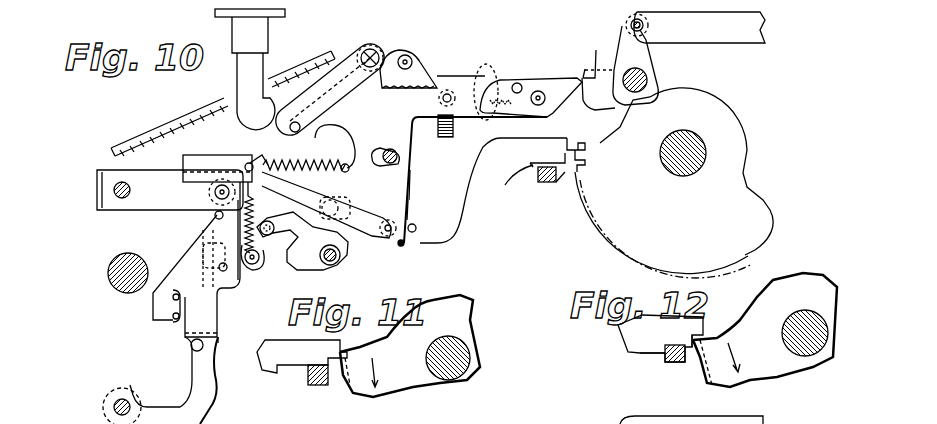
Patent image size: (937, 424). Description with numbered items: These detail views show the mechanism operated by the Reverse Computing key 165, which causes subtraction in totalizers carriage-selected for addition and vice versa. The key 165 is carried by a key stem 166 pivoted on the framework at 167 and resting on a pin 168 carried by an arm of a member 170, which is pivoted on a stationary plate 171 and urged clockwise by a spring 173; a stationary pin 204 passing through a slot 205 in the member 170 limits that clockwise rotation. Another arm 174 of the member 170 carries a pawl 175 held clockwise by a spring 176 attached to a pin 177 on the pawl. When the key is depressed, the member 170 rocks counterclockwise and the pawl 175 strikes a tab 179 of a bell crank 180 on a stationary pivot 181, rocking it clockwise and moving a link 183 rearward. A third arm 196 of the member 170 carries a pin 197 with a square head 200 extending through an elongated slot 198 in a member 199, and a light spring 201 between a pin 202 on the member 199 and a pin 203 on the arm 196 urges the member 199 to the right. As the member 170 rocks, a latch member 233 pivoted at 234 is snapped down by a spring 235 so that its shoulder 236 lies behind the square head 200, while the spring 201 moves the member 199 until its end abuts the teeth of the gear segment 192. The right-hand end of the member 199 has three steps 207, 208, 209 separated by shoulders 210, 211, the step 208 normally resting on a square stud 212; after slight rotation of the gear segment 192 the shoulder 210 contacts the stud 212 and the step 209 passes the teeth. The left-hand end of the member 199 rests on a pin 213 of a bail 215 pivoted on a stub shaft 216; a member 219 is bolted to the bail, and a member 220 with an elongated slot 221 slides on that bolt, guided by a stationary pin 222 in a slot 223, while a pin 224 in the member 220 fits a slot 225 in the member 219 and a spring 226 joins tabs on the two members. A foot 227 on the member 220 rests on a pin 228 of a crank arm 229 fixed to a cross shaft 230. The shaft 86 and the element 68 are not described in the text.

In FIG. 10, the Reverse Computing key 165 is at (285, 13).
In FIG. 10, the key stem 166 is at (238, 72).
In FIG. 10, the pivot 167 is at (375, 50).
In FIG. 10, the pin 168 is at (320, 119).
In FIG. 10, the member 170 is at (418, 121).
In FIG. 10, the stationary plate 171 is at (417, 57).
In FIG. 10, the spring 173 is at (454, 130).
In FIG. 10, the arm 174 is at (460, 78).
In FIG. 10, the pawl 175 is at (567, 72).
In FIG. 10, the spring 176 is at (498, 79).
In FIG. 10, the pin 177 is at (500, 123).
In FIG. 10, the tab 179 is at (596, 50).
In FIG. 10, the bell crank 180 is at (657, 68).
In FIG. 10, the stationary pivot 181 is at (647, 82).
In FIG. 10, the link 183 is at (732, 48).
In FIG. 10, the gear segment 192 is at (748, 150).
In FIG. 11, the gear segment 192 is at (470, 305).
In FIG. 12, the gear segment 192 is at (757, 297).
In FIG. 10, the shaft 86 is at (690, 178).
In FIG. 11, the shaft 86 is at (427, 347).
In FIG. 12, the shaft 86 is at (813, 298).
In FIG. 10, the third arm 196 is at (410, 185).
In FIG. 10, the pin 197 is at (390, 236).
In FIG. 10, the elongated slot 198 is at (416, 228).
In FIG. 10, the member 199 is at (183, 156).
In FIG. 11, the member 199 is at (283, 370).
In FIG. 12, the member 199 is at (620, 337).
In FIG. 10, the square head 200 is at (404, 246).
In FIG. 10, the spring 201 is at (285, 160).
In FIG. 10, the pin 202 is at (246, 163).
In FIG. 10, the pin 203 is at (347, 164).
In FIG. 10, the stationary pin 204 is at (393, 157).
In FIG. 10, the slot 205 is at (378, 156).
In FIG. 10, the step 207 is at (533, 166).
In FIG. 10, the step 208 is at (540, 182).
In FIG. 10, the step 209 is at (582, 167).
In FIG. 11, the step 209 is at (328, 385).
In FIG. 12, the step 209 is at (683, 360).
In FIG. 10, the shoulder 210 is at (530, 163).
In FIG. 12, the shoulder 210 is at (673, 343).
In FIG. 10, the shoulder 211 is at (565, 153).
In FIG. 10, the square stud 212 is at (557, 184).
In FIG. 12, the square stud 212 is at (667, 357).
In FIG. 10, the pin 213 is at (213, 192).
In FIG. 10, the bail 215 is at (107, 210).
In FIG. 10, the stub shaft 216 is at (117, 181).
In FIG. 10, the member 219 is at (256, 266).
In FIG. 10, the member 220 is at (215, 308).
In FIG. 10, the elongated slot 221 is at (215, 215).
In FIG. 10, the stationary pin 222 is at (175, 320).
In FIG. 10, the slot 223 is at (172, 297).
In FIG. 10, the pin 224 is at (219, 270).
In FIG. 10, the slot 225 is at (202, 252).
In FIG. 10, the spring 226 is at (260, 205).
In FIG. 10, the foot 227 is at (218, 334).
In FIG. 10, the pin 228 is at (191, 350).
In FIG. 10, the crank arm 229 is at (193, 382).
In FIG. 10, the cross shaft 230 is at (110, 407).
In FIG. 10, the latch member 233 is at (318, 236).
In FIG. 10, the pivot 234 is at (340, 256).
In FIG. 10, the spring 235 is at (338, 210).
In FIG. 10, the shoulder 236 is at (407, 202).
In FIG. 10, the shaft 68 is at (110, 259).